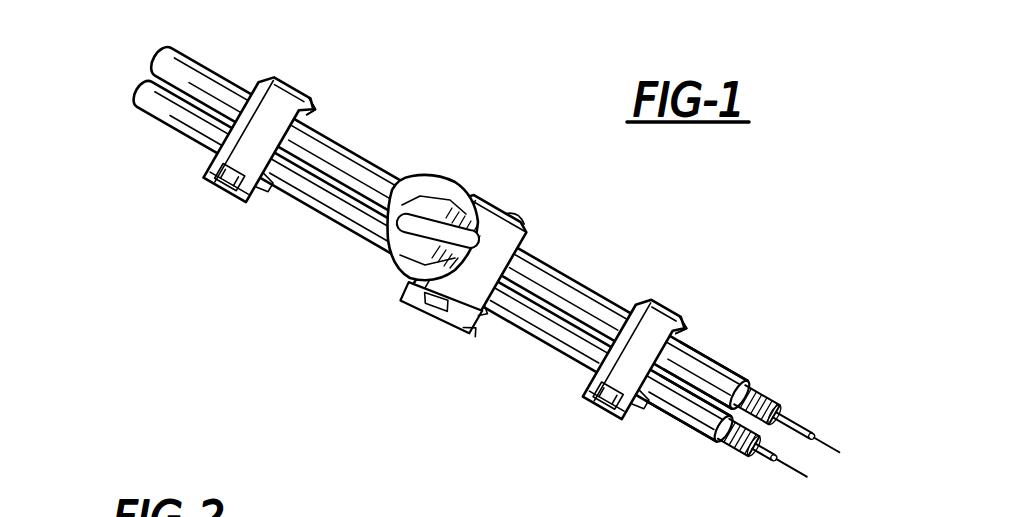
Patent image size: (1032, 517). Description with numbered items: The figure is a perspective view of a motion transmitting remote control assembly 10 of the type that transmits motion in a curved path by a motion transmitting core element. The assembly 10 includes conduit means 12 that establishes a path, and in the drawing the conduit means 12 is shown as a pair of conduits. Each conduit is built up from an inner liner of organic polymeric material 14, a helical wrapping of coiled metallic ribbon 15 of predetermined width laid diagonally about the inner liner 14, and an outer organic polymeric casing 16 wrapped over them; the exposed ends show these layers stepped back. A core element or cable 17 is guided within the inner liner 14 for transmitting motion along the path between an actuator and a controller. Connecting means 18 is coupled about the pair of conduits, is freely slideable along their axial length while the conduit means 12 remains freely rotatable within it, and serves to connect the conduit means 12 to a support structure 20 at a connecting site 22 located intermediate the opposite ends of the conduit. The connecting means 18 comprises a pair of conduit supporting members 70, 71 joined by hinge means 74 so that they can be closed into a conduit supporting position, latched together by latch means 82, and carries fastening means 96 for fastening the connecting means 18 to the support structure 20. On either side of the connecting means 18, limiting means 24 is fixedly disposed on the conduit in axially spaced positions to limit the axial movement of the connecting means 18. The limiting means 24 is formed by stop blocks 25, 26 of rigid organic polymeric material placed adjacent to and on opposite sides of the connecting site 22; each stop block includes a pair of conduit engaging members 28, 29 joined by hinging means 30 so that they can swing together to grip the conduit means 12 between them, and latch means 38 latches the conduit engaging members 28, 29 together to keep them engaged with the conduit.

The motion transmitting remote control assembly 10 is at (466, 258).
The conduit means 12 is at (145, 118).
The inner liner of organic polymeric material 14 is at (803, 420).
The helical wrapping of coiled metallic ribbon 15 is at (760, 410).
The outer organic polymeric casing 16 is at (710, 365).
The core element or cable 17 is at (835, 445).
The connecting means 18 is at (444, 259).
The support structure 20 is at (413, 261).
The connecting site 22 is at (390, 281).
The limiting means 24 is at (448, 241).
The stop block 25 is at (320, 102).
The stop block 26 is at (495, 217).
The conduit engaging member 28 is at (244, 205).
The conduit engaging member 29 is at (271, 188).
The hinging means 30 is at (312, 110).
The latch means 38 is at (218, 193).
The conduit supporting member 70 is at (473, 333).
The conduit supporting member 71 is at (484, 313).
The hinge means 74 is at (517, 213).
The latch means 82 is at (430, 313).
The fastening means 96 is at (425, 190).